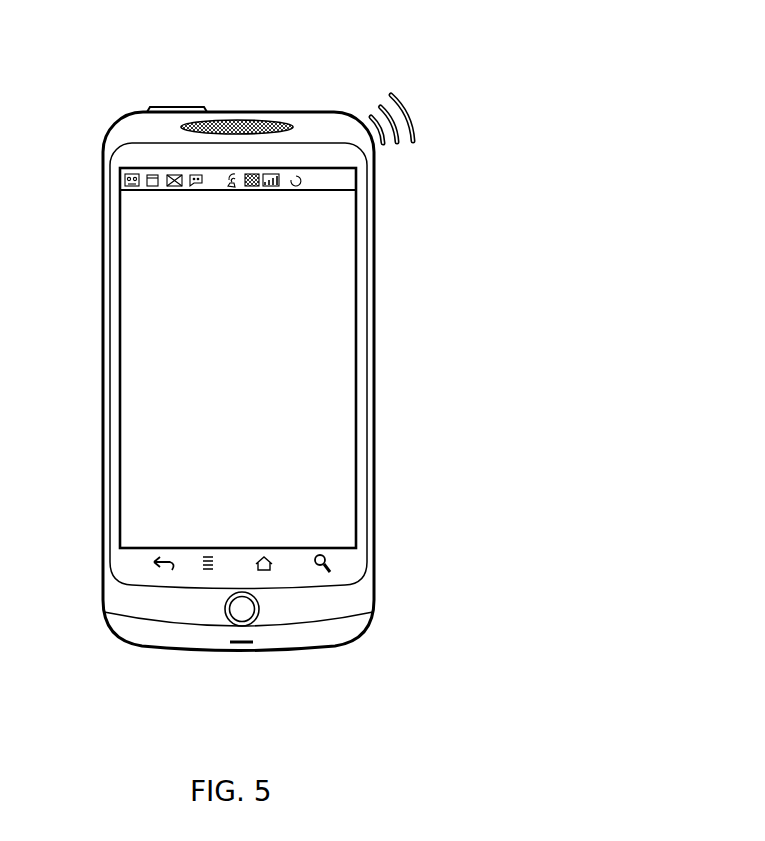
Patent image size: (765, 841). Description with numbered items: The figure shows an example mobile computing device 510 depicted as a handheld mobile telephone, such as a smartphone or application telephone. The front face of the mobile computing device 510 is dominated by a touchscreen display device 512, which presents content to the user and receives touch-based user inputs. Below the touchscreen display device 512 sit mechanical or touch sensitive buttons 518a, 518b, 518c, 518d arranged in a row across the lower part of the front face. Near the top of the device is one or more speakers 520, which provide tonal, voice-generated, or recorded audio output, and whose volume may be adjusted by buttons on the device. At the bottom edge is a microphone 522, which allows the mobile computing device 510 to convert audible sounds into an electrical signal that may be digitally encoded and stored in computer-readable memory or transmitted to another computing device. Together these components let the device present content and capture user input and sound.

The mobile computing device 510 is at (304, 42).
The touchscreen display device 512 is at (360, 368).
The button 518a is at (165, 556).
The button 518b is at (208, 555).
The button 518c is at (263, 556).
The button 518d is at (321, 554).
The speaker 520 is at (243, 121).
The microphone 522 is at (241, 645).